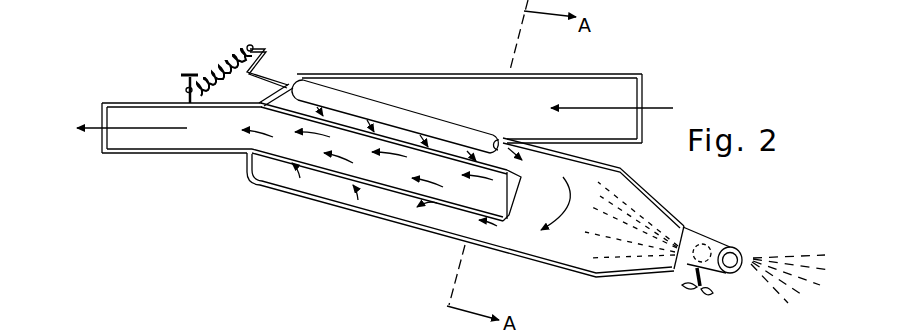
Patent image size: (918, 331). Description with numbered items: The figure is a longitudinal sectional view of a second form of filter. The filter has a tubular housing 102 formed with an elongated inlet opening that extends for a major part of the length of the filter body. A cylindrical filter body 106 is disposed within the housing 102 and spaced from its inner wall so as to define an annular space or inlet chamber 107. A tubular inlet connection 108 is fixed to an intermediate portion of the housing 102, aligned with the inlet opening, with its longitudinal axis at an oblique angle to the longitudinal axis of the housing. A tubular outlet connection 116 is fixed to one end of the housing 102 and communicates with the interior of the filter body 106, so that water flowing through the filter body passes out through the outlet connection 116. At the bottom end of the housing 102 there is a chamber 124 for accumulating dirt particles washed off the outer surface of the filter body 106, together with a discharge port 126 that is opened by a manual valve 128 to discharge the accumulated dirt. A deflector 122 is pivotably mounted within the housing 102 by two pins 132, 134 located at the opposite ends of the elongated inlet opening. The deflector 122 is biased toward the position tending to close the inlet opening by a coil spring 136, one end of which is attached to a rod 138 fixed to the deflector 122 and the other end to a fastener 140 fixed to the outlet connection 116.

The tubular housing 102 is at (430, 228).
The cylindrical filter body 106 is at (397, 192).
The annular space or inlet chamber 107 is at (333, 188).
The tubular inlet connection 108 is at (437, 74).
The tubular outlet connection 116 is at (183, 155).
The deflector 122 is at (407, 101).
The chamber 124 is at (630, 254).
The discharge port 126 is at (739, 274).
The manual valve 128 is at (707, 245).
The pin 132 is at (305, 78).
The pin 134 is at (504, 133).
The coil spring 136 is at (218, 62).
The rod 138 is at (263, 72).
The fastener 140 is at (188, 74).